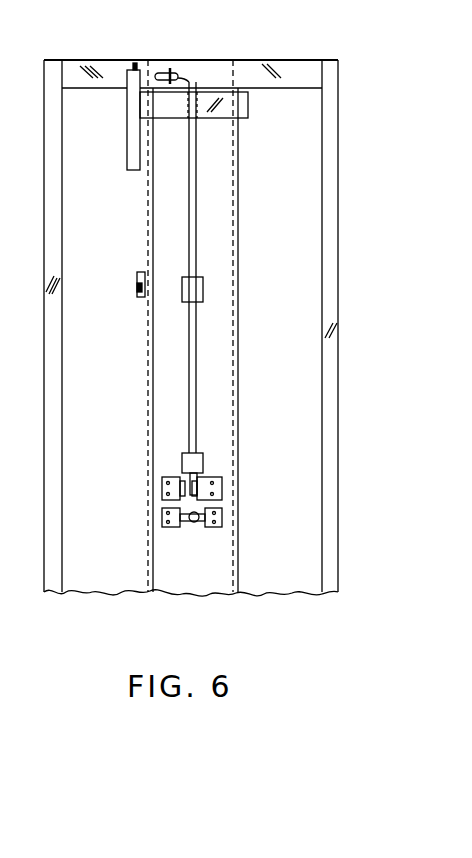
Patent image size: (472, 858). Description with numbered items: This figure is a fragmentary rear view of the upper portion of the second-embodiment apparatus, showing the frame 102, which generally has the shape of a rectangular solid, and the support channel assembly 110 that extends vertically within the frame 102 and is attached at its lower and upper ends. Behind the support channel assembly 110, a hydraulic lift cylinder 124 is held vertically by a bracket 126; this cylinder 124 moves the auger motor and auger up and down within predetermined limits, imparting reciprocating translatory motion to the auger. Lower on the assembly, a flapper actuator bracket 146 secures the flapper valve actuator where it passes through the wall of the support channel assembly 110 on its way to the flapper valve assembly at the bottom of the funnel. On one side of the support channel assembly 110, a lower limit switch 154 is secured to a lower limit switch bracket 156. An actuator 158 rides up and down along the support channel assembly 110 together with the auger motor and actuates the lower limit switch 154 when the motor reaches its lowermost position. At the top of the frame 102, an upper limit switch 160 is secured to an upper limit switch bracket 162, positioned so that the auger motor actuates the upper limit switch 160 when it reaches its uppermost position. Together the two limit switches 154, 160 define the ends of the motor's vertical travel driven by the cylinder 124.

The frame 102 is at (335, 262).
The support channel assembly 110 is at (237, 292).
The hydraulic lift cylinder 124 is at (195, 390).
The bracket 126 is at (222, 487).
The flapper actuator bracket 146 is at (222, 518).
The lower limit switch 154 is at (138, 288).
The lower limit switch bracket 156 is at (148, 285).
The actuator 158 is at (130, 132).
The upper limit switch 160 is at (183, 82).
The upper limit switch bracket 162 is at (159, 71).